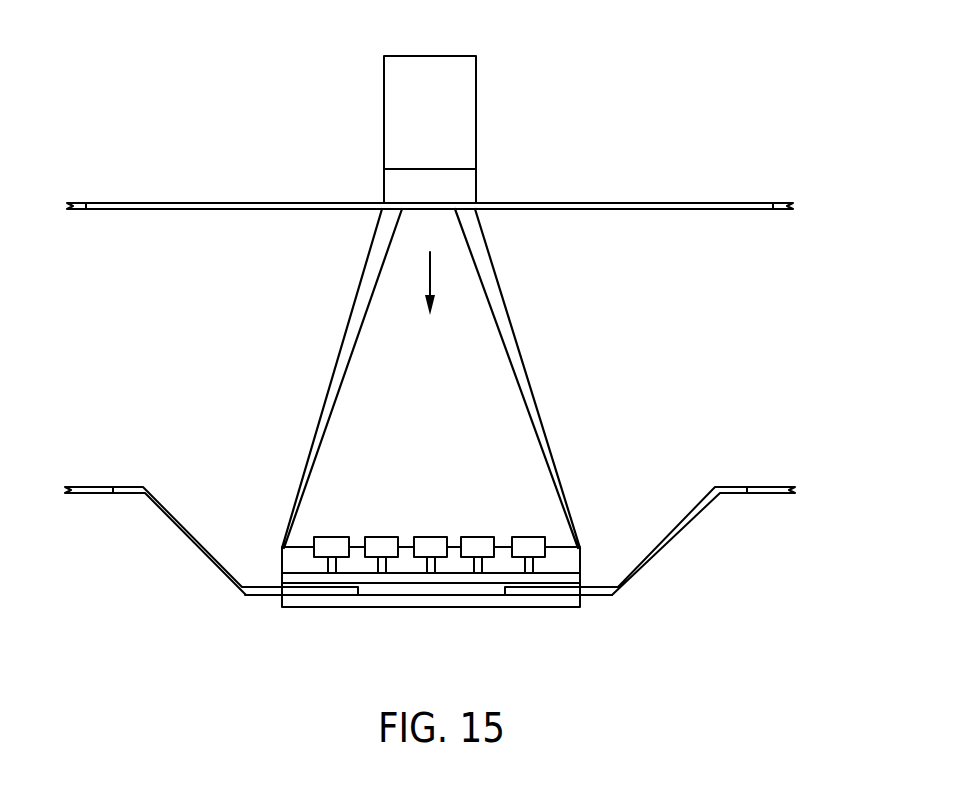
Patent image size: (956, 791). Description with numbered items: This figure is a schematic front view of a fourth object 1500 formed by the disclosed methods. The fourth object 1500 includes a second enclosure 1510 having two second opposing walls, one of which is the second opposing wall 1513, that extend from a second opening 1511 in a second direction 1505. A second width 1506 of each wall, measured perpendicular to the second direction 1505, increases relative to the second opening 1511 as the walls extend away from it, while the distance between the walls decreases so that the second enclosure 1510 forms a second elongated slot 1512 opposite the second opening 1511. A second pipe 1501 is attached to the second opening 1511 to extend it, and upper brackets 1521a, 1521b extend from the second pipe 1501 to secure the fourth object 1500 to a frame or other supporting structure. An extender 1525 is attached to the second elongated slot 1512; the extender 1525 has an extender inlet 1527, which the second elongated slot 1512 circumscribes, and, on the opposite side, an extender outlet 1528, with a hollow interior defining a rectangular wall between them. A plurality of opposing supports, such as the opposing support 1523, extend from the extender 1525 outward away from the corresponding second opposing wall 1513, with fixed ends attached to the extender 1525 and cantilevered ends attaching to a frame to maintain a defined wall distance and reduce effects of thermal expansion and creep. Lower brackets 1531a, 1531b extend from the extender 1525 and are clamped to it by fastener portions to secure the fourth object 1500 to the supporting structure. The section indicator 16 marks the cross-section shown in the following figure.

The fourth object 1500 is at (706, 139).
The second pipe 1501 is at (465, 113).
The second direction 1505 is at (430, 270).
The second width 1506 is at (540, 452).
The second enclosure 1510 is at (483, 263).
The second opening 1511 is at (392, 205).
The second elongated slot 1512 is at (282, 553).
The second opposing wall 1513 is at (500, 352).
The upper bracket 1521a is at (143, 202).
The upper bracket 1521b is at (612, 202).
The opposing support 1523 is at (395, 537).
The extender 1525 is at (398, 588).
The extender inlet 1527 is at (556, 545).
The extender outlet 1528 is at (298, 607).
The lower bracket 1531a is at (130, 493).
The lower bracket 1531b is at (732, 493).
The section line for FIG. 16 is at (430, 543).